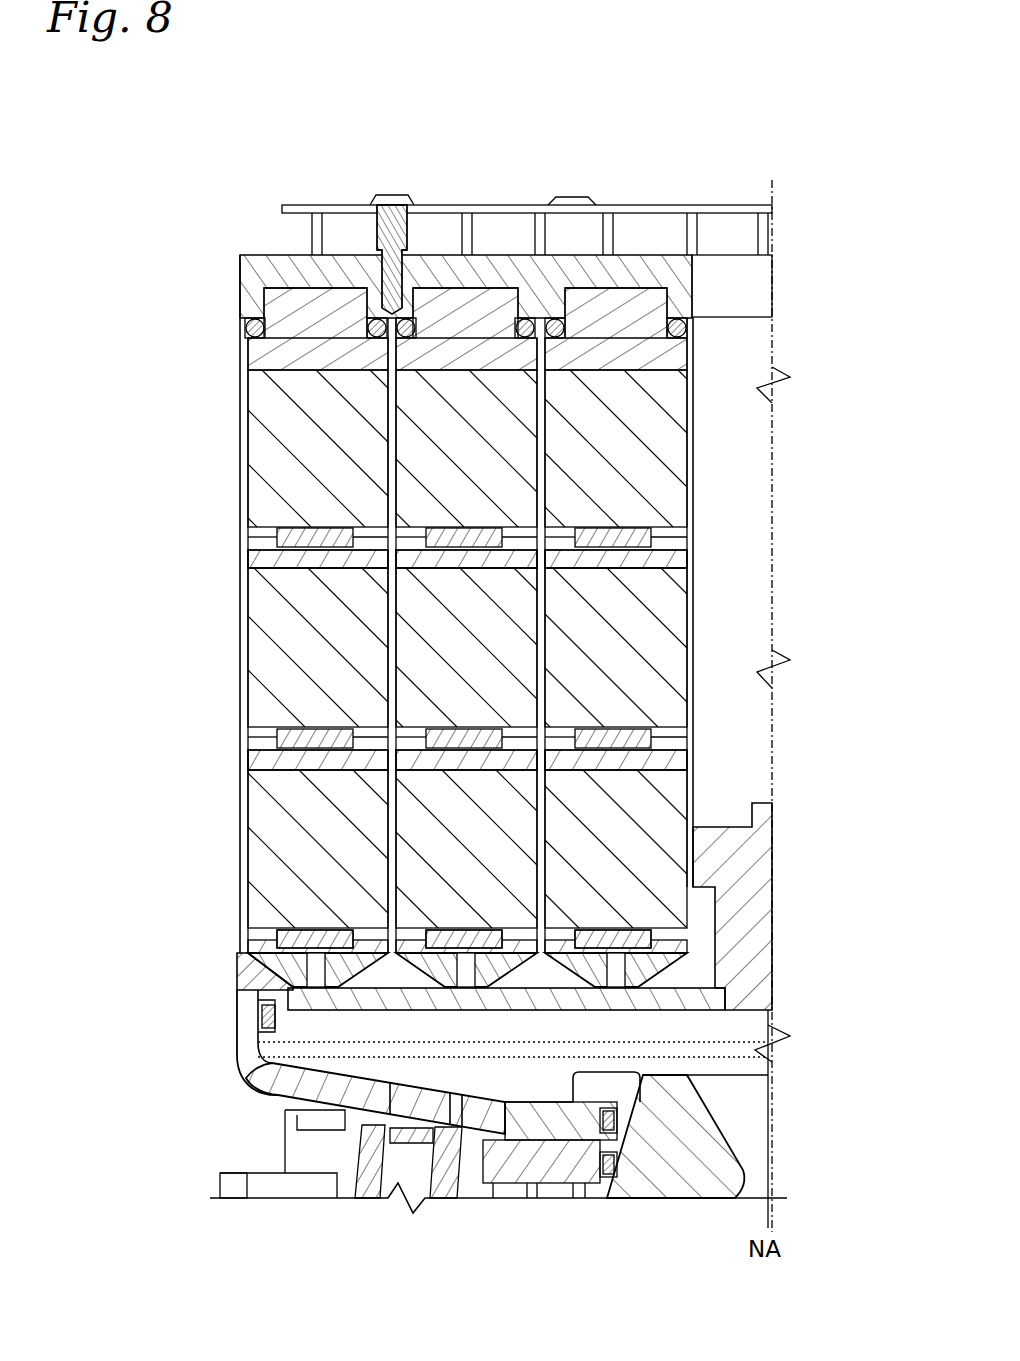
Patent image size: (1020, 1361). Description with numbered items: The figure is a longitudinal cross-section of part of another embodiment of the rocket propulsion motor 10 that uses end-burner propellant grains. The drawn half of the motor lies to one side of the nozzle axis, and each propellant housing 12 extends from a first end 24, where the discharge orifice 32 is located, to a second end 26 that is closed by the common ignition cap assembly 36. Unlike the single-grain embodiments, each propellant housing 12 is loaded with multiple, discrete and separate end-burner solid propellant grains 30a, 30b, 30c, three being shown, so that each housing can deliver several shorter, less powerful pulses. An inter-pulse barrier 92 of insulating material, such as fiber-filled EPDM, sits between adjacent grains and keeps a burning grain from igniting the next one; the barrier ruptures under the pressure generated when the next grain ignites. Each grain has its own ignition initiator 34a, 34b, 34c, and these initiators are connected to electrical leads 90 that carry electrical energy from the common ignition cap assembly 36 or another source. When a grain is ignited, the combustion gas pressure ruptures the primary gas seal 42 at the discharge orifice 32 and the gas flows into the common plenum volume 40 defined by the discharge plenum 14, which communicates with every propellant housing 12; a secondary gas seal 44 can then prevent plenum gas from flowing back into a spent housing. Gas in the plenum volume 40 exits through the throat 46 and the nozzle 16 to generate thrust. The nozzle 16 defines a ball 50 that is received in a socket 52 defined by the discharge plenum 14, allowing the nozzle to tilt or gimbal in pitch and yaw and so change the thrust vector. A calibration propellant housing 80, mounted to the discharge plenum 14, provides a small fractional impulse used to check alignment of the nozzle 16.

The rocket propulsion motor 10 is at (760, 115).
The propellant housing 12 is at (702, 602).
The discharge plenum 14 is at (252, 1103).
The nozzle 16 is at (784, 1163).
The first end 24 is at (240, 893).
The second end 26 is at (240, 360).
The end-burner solid propellant grain 30a is at (680, 805).
The end-burner solid propellant grain 30b is at (680, 655).
The end-burner solid propellant grain 30c is at (680, 455).
The discharge orifice 32 is at (740, 1000).
The ignition initiator 34a is at (290, 935).
The ignition initiator 34b is at (290, 735).
The ignition initiator 34c is at (290, 535).
The common ignition cap assembly 36 is at (500, 208).
The plenum volume 40 is at (750, 1038).
The primary gas seal 42 is at (700, 945).
The secondary gas seal 44 is at (262, 1050).
The throat 46 is at (760, 1175).
The ball 50 is at (675, 1180).
The socket 52 is at (605, 1175).
The calibration propellant housing 80 is at (373, 1180).
The electrical lead 90 is at (740, 905).
The inter-pulse barrier 92 is at (690, 542).